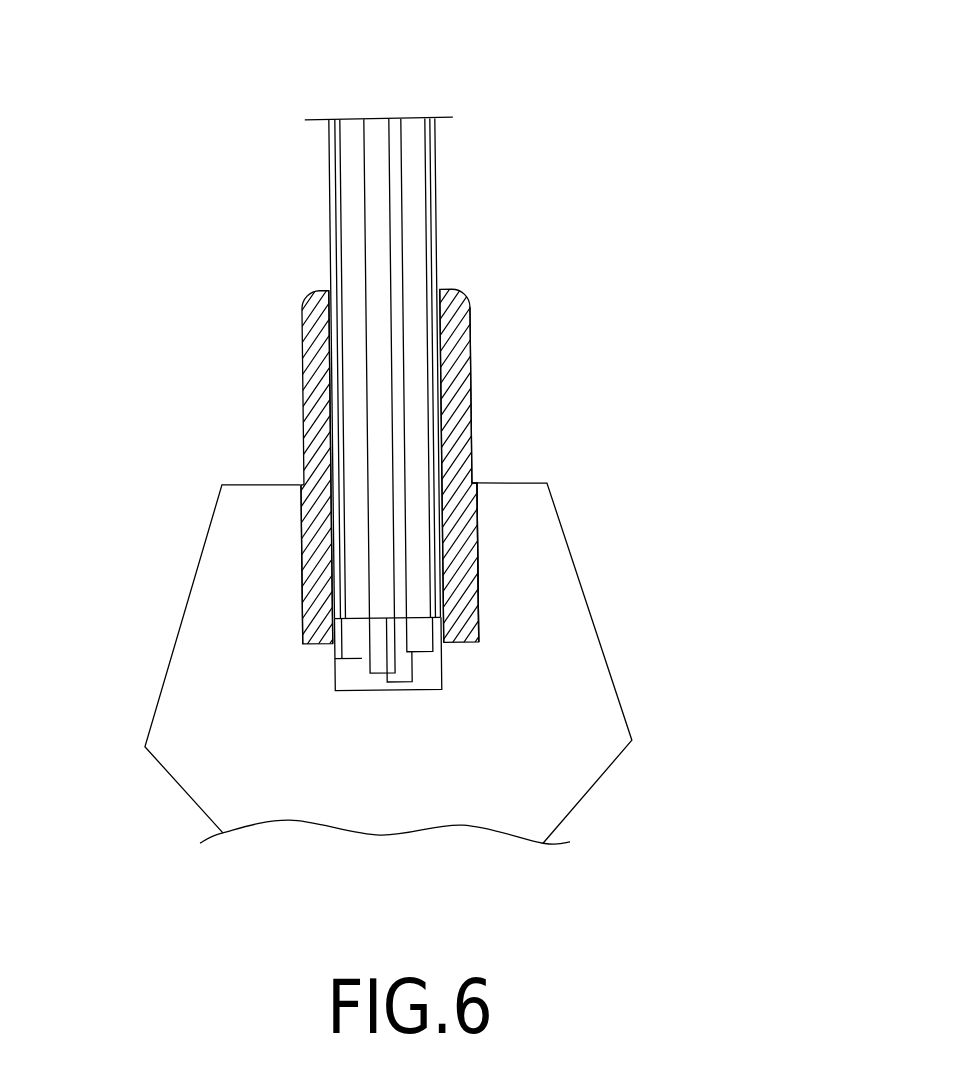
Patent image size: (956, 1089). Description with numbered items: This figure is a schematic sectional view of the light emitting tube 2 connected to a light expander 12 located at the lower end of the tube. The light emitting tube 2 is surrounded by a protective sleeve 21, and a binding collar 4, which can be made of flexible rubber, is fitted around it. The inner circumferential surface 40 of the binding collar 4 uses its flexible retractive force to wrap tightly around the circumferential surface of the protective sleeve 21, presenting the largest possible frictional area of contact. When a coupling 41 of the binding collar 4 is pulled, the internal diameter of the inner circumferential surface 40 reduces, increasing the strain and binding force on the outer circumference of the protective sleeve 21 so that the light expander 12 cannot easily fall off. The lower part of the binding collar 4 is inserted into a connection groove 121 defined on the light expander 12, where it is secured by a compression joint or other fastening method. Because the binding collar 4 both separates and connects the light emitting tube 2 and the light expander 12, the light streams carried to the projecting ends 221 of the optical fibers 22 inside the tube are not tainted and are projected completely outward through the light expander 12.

The light emitting tube 2 is at (435, 168).
The protective sleeve 21 is at (325, 198).
The optical fibers 22 is at (355, 640).
The projecting ends 221 is at (362, 658).
The binding collar 4 is at (318, 420).
The inner circumferential surface 40 is at (328, 366).
The coupling 41 is at (472, 388).
The light expander 12 is at (592, 613).
The connection groove 121 is at (477, 592).